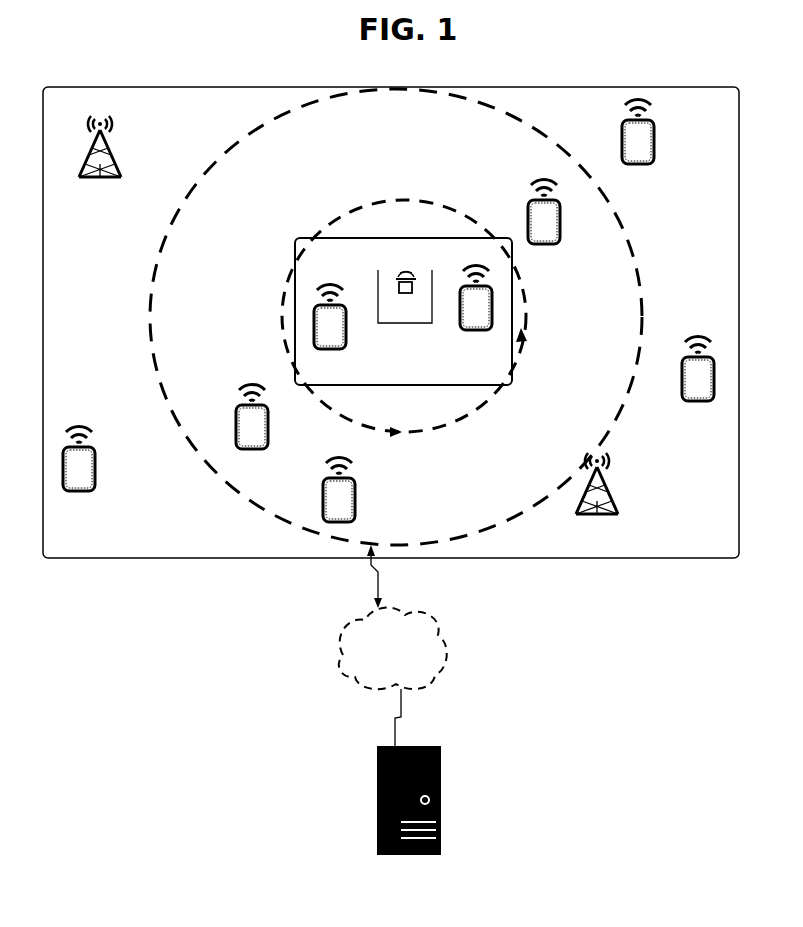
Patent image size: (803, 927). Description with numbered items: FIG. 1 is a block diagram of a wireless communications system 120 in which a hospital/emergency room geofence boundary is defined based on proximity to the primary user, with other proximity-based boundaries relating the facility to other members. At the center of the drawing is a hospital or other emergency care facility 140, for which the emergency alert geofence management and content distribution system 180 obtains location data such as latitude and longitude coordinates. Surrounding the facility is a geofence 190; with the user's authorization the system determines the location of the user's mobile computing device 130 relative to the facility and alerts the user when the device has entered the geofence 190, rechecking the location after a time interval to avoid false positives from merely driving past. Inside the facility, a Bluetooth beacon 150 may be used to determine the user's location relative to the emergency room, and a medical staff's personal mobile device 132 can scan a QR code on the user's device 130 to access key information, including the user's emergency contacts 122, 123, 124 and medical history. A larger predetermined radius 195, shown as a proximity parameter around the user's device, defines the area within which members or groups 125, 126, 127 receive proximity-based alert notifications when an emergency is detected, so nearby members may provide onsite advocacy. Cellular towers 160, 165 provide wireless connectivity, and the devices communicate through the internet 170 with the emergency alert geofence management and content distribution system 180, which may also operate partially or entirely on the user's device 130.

The wireless communications system 120 is at (49, 87).
The emergency contact 122 is at (79, 491).
The emergency contact 123 is at (698, 384).
The emergency contact 124 is at (638, 146).
The member or group 125 is at (544, 225).
The member or group 126 is at (339, 498).
The member or group 127 is at (252, 435).
The user's mobile computing device 130 is at (329, 330).
The medical staff's personal mobile device 132 is at (472, 317).
The hospital or emergency care facility 140 is at (403, 311).
The Bluetooth beacon 150 is at (405, 306).
The cellular tower 160 is at (100, 177).
The cellular tower 165 is at (596, 501).
The internet 170 is at (393, 617).
The emergency alert geofence management and content distribution system 180 is at (377, 795).
The geofence 190 is at (404, 310).
The predetermined radius 195 is at (396, 317).